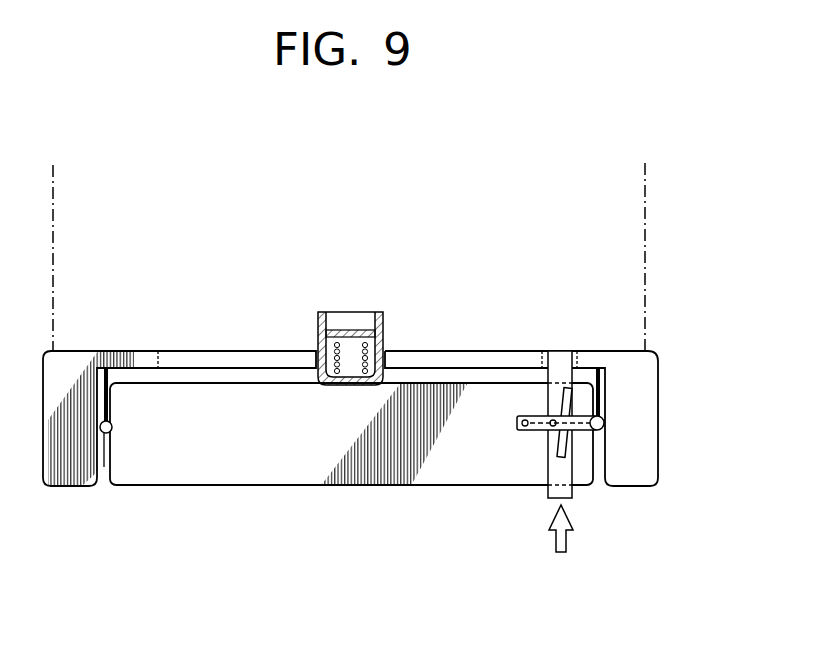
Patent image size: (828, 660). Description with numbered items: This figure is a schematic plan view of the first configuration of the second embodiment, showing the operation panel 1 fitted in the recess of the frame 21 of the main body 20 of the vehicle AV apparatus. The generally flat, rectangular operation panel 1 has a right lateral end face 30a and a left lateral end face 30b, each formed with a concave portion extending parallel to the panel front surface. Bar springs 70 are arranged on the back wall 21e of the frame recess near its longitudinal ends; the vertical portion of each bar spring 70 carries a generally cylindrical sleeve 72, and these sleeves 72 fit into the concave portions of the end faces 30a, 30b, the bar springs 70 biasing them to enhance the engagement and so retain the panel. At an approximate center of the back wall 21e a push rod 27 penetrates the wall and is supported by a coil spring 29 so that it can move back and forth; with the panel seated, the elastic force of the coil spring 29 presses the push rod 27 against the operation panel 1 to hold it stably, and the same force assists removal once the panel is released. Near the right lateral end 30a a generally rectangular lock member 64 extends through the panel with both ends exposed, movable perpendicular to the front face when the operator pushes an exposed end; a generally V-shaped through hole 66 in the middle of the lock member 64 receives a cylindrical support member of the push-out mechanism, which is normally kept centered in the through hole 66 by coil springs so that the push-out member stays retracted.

The operation panel 1 is at (268, 455).
The main body 20 is at (170, 275).
The frame 21 is at (640, 403).
The back wall 21e is at (250, 372).
The push rod 27 is at (380, 333).
The coil spring 29 is at (338, 345).
The right lateral end face 30a is at (600, 457).
The left lateral end face 30b is at (104, 467).
The lock member 64 is at (552, 500).
The through hole 66 is at (557, 403).
The bar spring 70 is at (603, 368).
The sleeve 72 is at (605, 426).